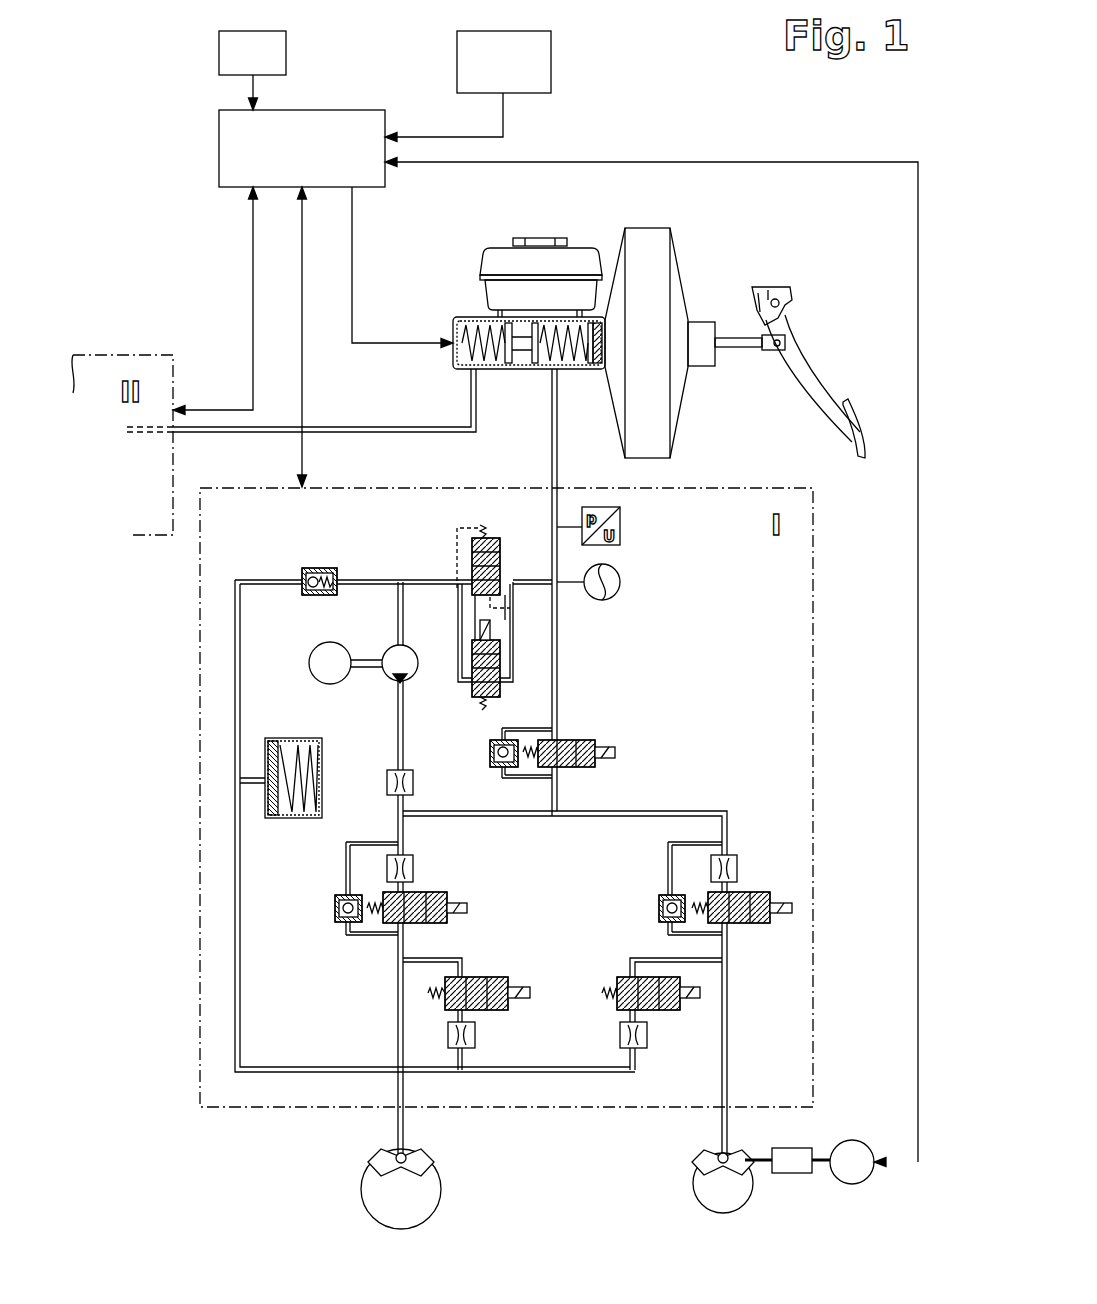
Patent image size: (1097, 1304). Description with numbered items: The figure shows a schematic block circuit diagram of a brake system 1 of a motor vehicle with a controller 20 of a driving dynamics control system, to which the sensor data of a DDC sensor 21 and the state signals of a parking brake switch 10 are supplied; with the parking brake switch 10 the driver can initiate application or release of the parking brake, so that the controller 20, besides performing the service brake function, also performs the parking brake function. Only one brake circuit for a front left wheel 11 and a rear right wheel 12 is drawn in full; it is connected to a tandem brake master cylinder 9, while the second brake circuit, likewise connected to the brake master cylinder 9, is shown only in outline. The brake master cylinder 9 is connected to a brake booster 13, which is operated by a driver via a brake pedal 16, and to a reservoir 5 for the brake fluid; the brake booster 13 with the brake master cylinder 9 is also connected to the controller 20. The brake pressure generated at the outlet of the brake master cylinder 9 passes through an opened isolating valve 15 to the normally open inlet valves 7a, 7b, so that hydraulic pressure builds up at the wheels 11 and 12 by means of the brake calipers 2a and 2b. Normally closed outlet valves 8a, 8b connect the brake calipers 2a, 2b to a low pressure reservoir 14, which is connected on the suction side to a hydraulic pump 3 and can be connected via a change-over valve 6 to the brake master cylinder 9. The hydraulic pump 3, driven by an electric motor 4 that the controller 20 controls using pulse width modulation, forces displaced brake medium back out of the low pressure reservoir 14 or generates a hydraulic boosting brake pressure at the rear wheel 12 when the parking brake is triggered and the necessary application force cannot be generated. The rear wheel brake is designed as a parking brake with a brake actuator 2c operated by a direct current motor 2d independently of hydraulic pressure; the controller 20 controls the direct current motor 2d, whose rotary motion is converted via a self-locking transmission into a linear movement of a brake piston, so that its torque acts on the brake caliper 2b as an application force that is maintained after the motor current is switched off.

The brake system 1 is at (210, 360).
The brake caliper 2a is at (365, 1157).
The brake caliper 2b is at (692, 1158).
The brake actuator 2c is at (795, 1150).
The direct current motor 2d is at (852, 1140).
The hydraulic pump 3 is at (418, 663).
The electric motor 4 is at (340, 682).
The reservoir 5 is at (507, 262).
The change-over valve 6 is at (473, 560).
The inlet valve 7a is at (438, 892).
The inlet valve 7b is at (763, 892).
The outlet valve 8a is at (500, 977).
The outlet valve 8b is at (670, 1010).
The brake master cylinder 9 is at (582, 370).
The parking brake switch 10 is at (528, 65).
The front left wheel 11 is at (375, 1190).
The rear right wheel 12 is at (698, 1190).
The brake booster 13 is at (657, 268).
The low pressure reservoir 14 is at (297, 820).
The isolating valve 15 is at (587, 740).
The brake pedal 16 is at (803, 375).
The controller 20 is at (242, 153).
The DDC sensor 21 is at (242, 57).